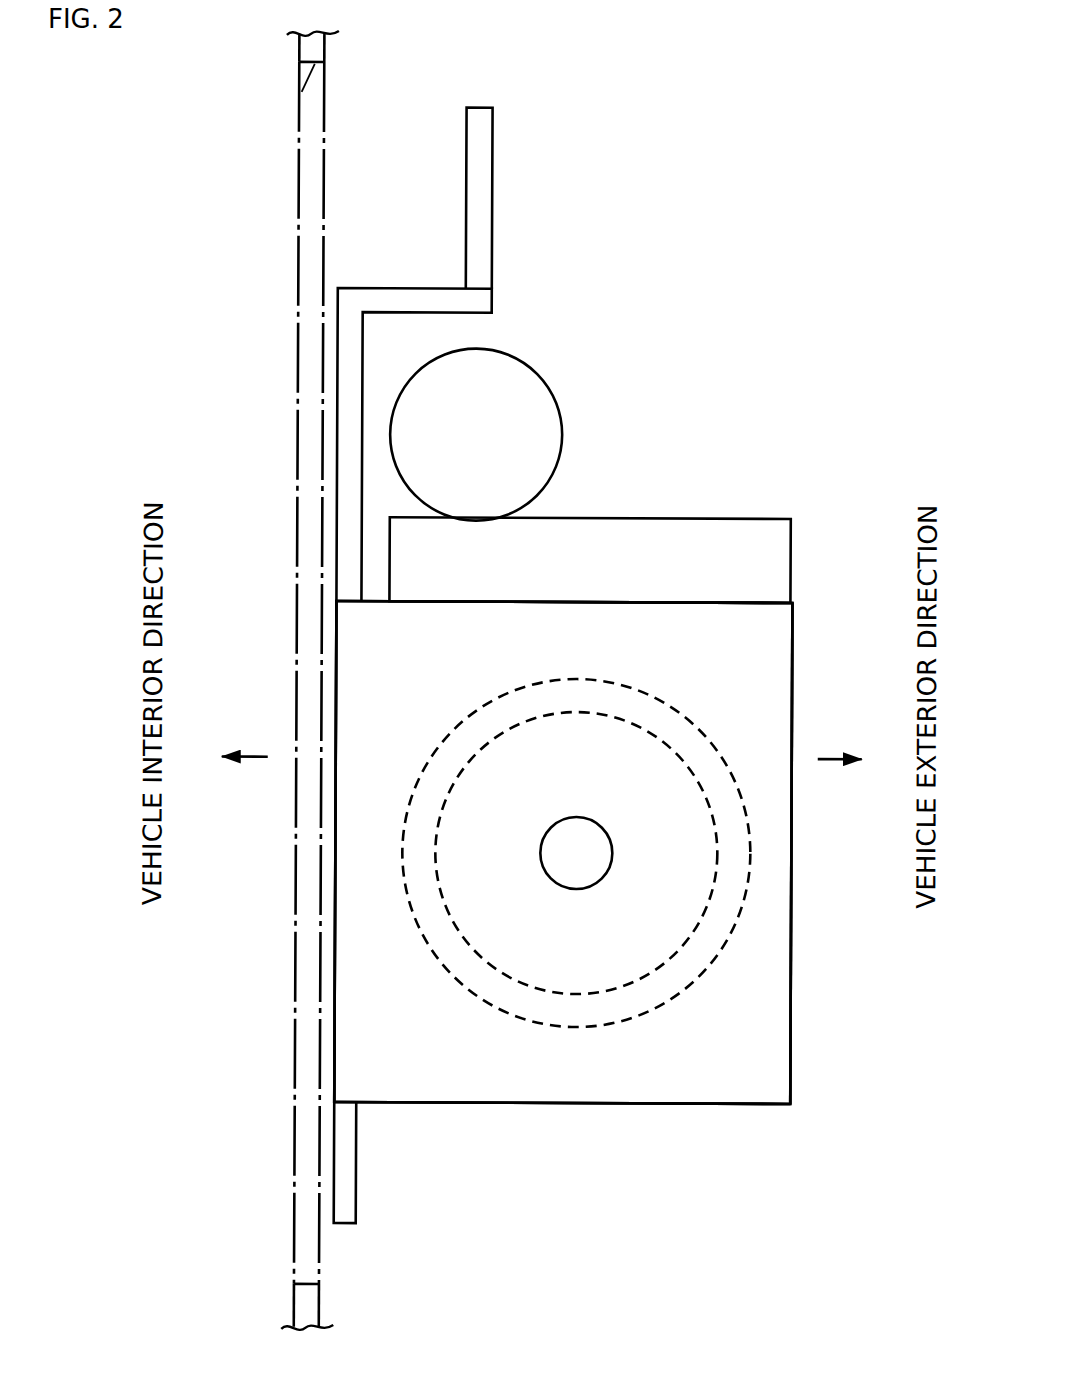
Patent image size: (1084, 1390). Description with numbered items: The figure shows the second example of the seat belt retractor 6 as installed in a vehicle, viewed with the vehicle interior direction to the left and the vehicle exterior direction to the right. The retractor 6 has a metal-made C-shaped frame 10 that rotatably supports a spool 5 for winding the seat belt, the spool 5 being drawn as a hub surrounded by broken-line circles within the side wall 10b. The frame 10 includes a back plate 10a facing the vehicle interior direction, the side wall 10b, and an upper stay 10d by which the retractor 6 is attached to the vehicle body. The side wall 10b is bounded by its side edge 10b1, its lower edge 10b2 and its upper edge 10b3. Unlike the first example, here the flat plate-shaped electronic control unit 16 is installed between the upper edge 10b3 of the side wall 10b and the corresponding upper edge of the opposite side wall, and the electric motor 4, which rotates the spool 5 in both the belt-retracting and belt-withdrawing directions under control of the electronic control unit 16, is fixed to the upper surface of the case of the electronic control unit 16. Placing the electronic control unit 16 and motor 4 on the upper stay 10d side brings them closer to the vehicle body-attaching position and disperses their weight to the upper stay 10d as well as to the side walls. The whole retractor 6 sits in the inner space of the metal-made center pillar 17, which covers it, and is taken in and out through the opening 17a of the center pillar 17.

The electric motor 4 is at (520, 425).
The spool 5 is at (513, 975).
The seat belt retractor 6 is at (712, 270).
The frame 10 is at (424, 286).
The back plate 10a is at (357, 1183).
The side wall 10b is at (553, 1080).
The side edge of main plate portion 10b1 is at (792, 995).
The lower edge 10b2 is at (727, 1103).
The upper edge 10b3 is at (730, 602).
The upper stay 10d is at (482, 190).
The electronic control unit 16 is at (642, 537).
The center pillar 17 is at (292, 1080).
The opening 17a is at (299, 93).